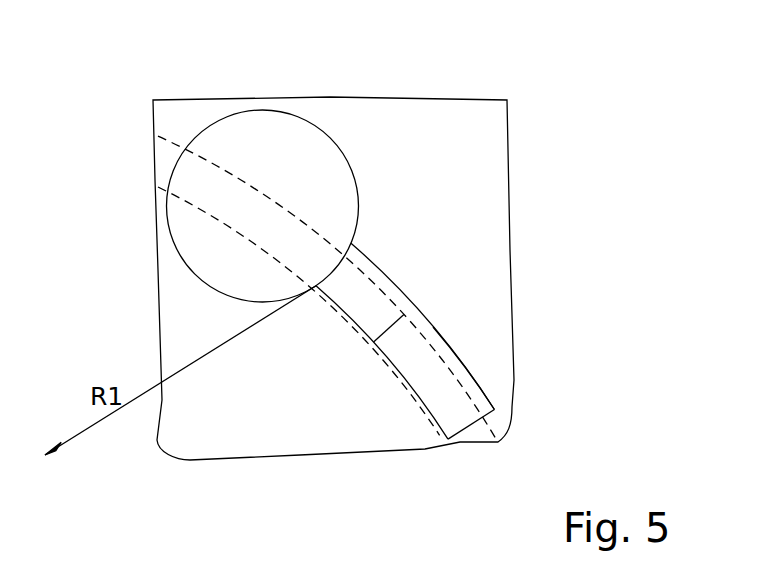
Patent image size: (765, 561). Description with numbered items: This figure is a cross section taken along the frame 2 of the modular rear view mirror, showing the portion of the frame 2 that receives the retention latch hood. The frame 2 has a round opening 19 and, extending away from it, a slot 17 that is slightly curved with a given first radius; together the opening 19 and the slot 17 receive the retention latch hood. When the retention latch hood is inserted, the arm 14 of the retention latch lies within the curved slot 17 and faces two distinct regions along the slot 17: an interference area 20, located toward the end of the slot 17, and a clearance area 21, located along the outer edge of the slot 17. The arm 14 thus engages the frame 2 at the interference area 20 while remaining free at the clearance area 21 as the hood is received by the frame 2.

The frame 2 is at (482, 155).
The opening 19 is at (292, 130).
The slot 17 is at (400, 285).
The arm 14 is at (423, 353).
The clearance area 21 is at (465, 373).
The interference area 20 is at (433, 417).